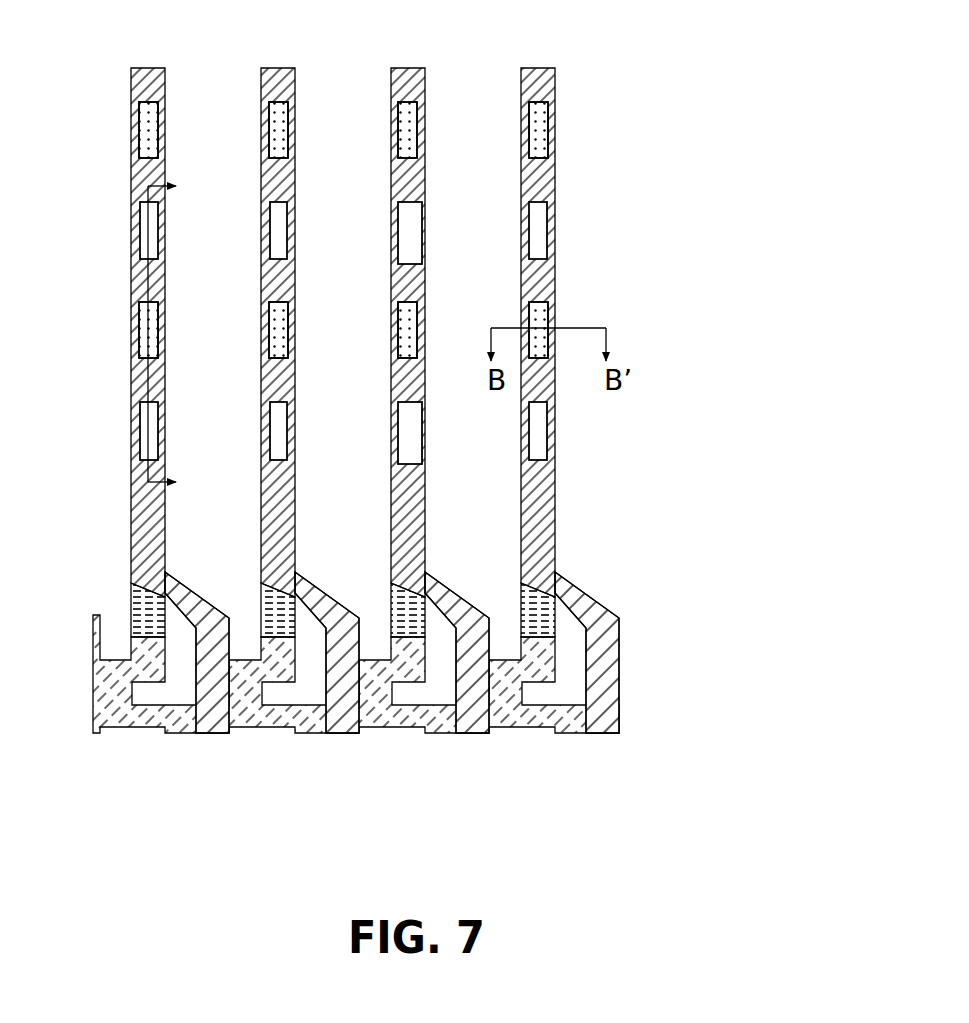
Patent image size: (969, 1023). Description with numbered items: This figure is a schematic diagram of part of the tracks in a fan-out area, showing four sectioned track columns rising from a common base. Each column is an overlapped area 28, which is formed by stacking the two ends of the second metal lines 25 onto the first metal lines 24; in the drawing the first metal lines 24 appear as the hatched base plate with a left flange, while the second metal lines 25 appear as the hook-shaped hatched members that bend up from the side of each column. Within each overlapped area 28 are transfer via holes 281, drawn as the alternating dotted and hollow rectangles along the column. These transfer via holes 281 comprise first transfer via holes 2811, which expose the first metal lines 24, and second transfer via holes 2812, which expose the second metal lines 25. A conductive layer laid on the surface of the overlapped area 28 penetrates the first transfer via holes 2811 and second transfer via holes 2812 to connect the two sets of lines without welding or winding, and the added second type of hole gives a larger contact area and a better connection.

The first metal lines 24 is at (122, 700).
The second metal lines 25 is at (206, 700).
The overlapped area 28 is at (131, 163).
The transfer via holes 281 is at (650, 185).
The first transfer via holes 2811 is at (548, 131).
The second transfer via holes 2812 is at (610, 235).